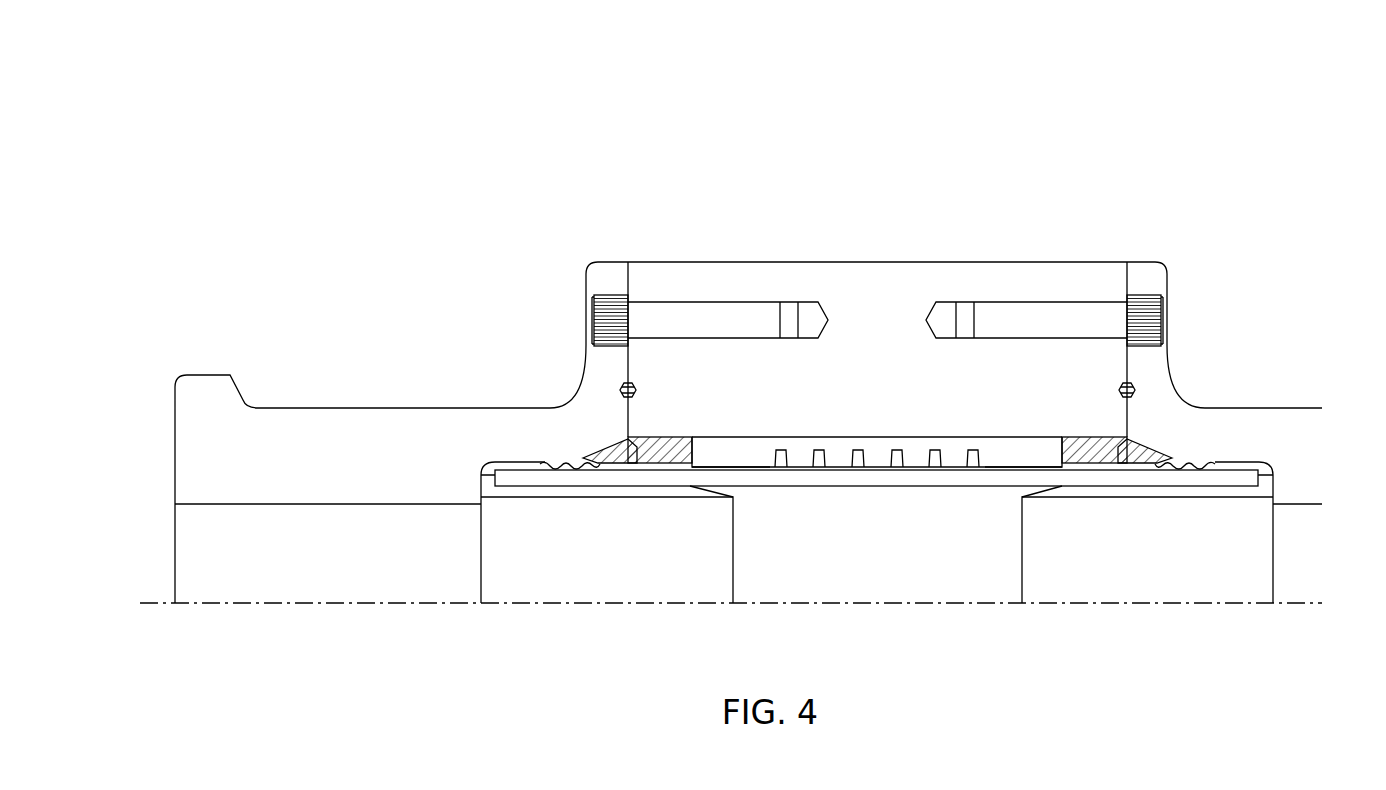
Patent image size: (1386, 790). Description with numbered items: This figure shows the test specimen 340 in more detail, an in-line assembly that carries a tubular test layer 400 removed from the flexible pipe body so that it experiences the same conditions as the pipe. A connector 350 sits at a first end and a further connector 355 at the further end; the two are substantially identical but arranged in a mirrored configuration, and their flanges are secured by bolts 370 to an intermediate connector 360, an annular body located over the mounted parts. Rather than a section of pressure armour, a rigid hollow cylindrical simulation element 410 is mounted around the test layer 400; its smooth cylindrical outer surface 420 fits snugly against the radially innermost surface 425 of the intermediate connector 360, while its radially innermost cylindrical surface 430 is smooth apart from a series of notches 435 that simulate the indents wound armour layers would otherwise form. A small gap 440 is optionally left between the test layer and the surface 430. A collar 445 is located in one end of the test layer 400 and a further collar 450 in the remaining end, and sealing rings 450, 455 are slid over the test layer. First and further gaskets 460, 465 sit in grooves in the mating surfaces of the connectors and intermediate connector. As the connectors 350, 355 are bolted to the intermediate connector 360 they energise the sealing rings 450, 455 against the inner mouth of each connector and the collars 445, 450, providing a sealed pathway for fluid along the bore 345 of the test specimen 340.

The test specimen 340 is at (779, 130).
The bore 345 is at (932, 598).
The connector 350 is at (1290, 420).
The further connector 355 is at (338, 425).
The intermediate connector 360 is at (935, 274).
The bolts 370 is at (606, 308).
The tubular test layer 400 is at (940, 480).
The simulation element 410 is at (740, 450).
The cylindrical outer surface 420 is at (893, 438).
The radially innermost surface 425 is at (1030, 437).
The radially innermost cylindrical surface 430 is at (745, 478).
The notches 435 is at (818, 478).
The gap 440 is at (1030, 478).
The collar 445 is at (1193, 490).
The further collar 450 is at (1122, 456).
The further sealing ring 455 is at (625, 448).
The first gasket 460 is at (1135, 389).
The further gasket 465 is at (621, 388).